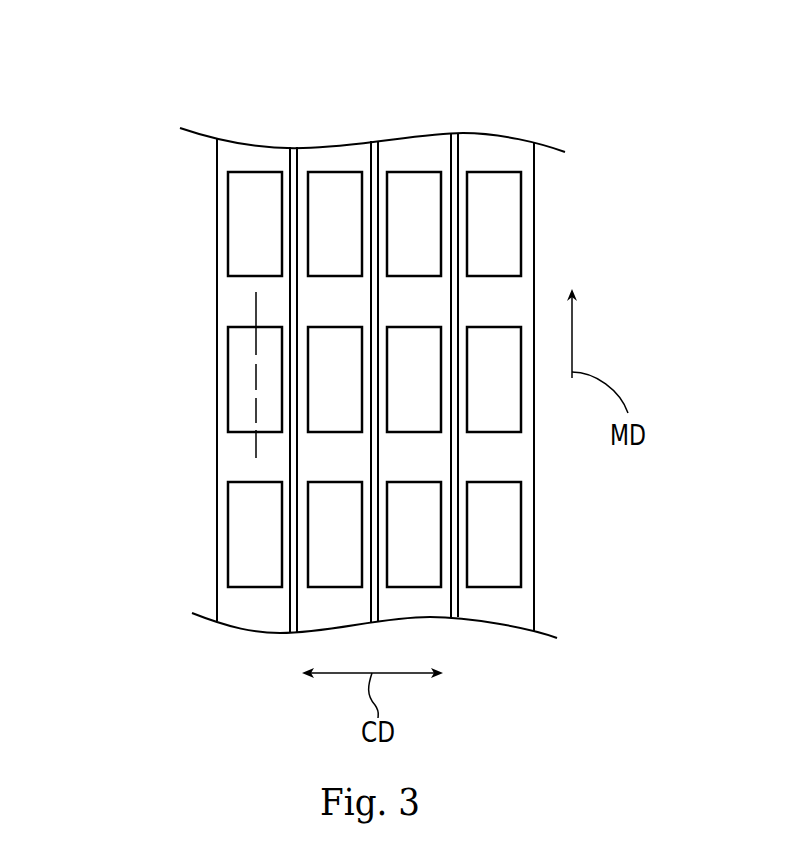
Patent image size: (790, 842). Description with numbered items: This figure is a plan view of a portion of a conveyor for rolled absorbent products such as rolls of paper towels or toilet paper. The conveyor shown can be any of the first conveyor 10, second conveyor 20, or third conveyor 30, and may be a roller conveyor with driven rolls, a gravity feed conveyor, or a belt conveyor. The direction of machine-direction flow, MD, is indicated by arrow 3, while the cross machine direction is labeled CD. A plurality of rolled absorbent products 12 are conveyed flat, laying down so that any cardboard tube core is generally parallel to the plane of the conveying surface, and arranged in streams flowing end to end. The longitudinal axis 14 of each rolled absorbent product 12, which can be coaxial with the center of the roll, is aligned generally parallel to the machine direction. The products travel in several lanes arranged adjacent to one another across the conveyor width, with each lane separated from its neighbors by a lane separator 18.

The arrow 3 is at (577, 333).
The first conveyor 10 is at (528, 558).
The rolled absorbent products 12 is at (240, 352).
The longitudinal axis 14 is at (256, 443).
The lane separator 18 is at (452, 148).
The second conveyor 20 is at (528, 558).
The third conveyor 30 is at (528, 558).